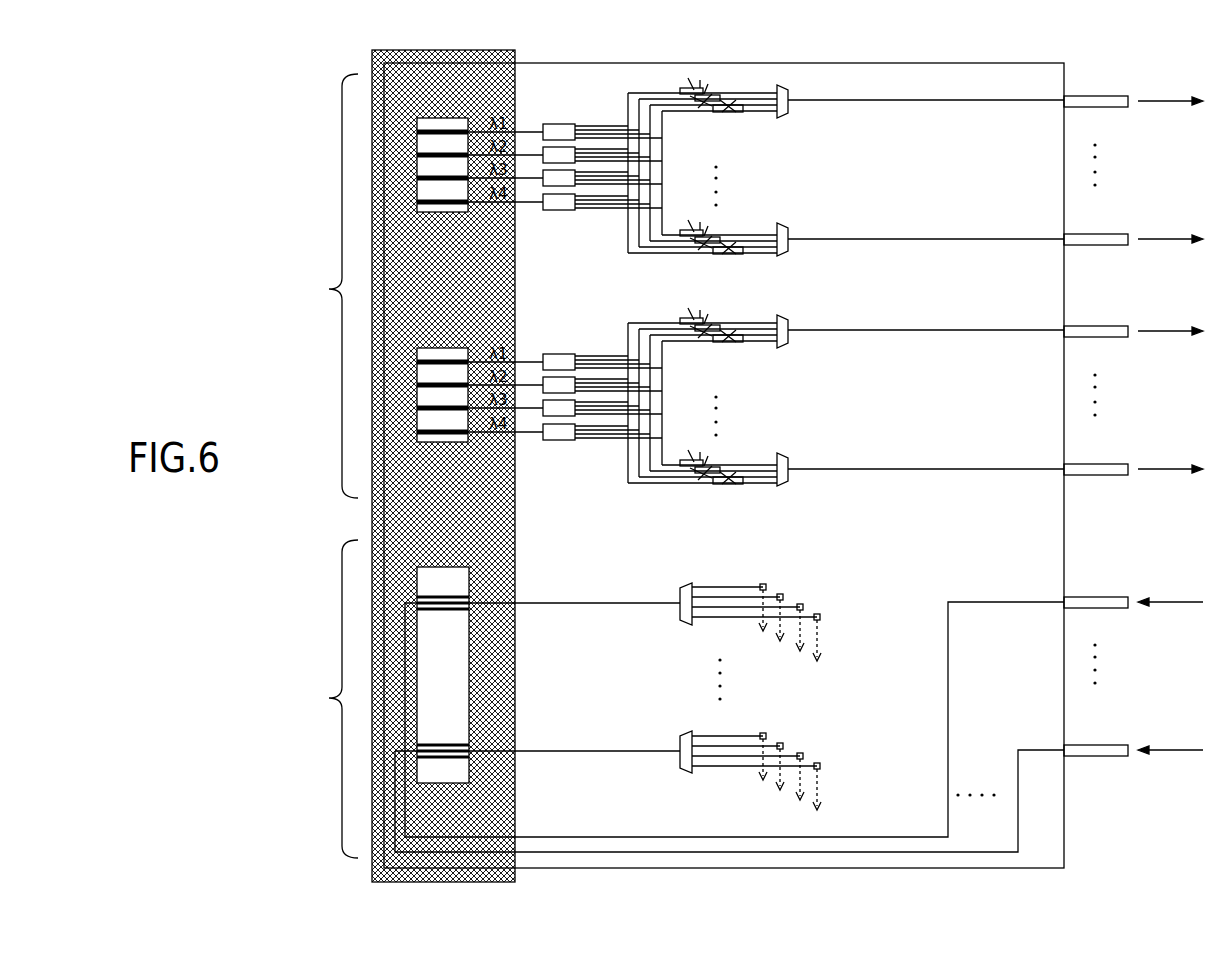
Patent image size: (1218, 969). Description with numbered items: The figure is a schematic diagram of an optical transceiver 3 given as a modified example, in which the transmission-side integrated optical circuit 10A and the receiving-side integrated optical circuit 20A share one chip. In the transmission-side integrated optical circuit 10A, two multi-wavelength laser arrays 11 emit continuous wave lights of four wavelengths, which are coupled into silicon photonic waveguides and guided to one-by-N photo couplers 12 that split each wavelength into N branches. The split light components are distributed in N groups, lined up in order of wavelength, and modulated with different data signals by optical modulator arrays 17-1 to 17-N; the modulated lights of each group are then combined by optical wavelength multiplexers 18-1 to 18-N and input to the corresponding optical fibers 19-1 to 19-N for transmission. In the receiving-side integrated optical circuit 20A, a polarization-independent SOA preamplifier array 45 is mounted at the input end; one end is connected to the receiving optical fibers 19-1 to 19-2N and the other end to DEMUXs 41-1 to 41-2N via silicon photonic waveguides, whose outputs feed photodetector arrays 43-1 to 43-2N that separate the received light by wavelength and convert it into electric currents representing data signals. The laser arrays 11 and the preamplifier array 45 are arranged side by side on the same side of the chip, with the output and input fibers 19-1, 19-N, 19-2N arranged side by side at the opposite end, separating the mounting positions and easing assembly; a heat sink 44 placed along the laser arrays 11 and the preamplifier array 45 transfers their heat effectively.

The optical transceiver 3 is at (1019, 47).
The heat sink 44 is at (488, 49).
The polarization-independent SOA preamplifier array 45 is at (433, 560).
The laser array 11 is at (447, 118).
The 1×N photo couplers 12 is at (578, 118).
The optical modulator array 17-1 is at (752, 117).
The optical modulator array 17-N is at (752, 259).
The optical wavelength multiplexer 18-1 is at (792, 90).
The optical wavelength multiplexer 18-N is at (792, 228).
The optical fiber 19-1 is at (1100, 96).
The optical fiber 19-N is at (1100, 234).
The optical fiber 19-2N is at (1100, 745).
The transmission-side integrated optical circuit 10A is at (318, 286).
The receiving-side integrated optical circuit 20A is at (318, 699).
The DEMUX 41-1 is at (678, 620).
The DEMUX 41-2N is at (678, 768).
The photodetector array 43-1 is at (843, 620).
The photodetector array 43-2N is at (843, 769).